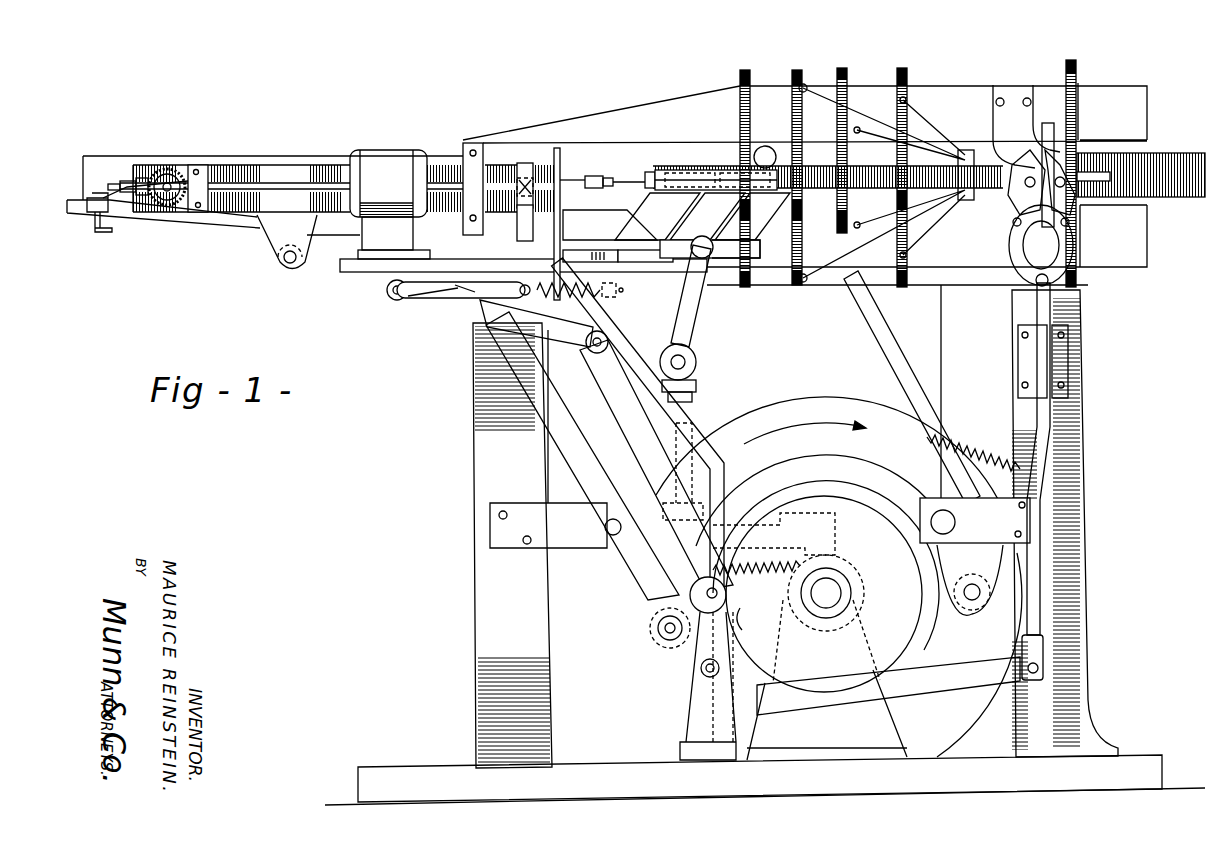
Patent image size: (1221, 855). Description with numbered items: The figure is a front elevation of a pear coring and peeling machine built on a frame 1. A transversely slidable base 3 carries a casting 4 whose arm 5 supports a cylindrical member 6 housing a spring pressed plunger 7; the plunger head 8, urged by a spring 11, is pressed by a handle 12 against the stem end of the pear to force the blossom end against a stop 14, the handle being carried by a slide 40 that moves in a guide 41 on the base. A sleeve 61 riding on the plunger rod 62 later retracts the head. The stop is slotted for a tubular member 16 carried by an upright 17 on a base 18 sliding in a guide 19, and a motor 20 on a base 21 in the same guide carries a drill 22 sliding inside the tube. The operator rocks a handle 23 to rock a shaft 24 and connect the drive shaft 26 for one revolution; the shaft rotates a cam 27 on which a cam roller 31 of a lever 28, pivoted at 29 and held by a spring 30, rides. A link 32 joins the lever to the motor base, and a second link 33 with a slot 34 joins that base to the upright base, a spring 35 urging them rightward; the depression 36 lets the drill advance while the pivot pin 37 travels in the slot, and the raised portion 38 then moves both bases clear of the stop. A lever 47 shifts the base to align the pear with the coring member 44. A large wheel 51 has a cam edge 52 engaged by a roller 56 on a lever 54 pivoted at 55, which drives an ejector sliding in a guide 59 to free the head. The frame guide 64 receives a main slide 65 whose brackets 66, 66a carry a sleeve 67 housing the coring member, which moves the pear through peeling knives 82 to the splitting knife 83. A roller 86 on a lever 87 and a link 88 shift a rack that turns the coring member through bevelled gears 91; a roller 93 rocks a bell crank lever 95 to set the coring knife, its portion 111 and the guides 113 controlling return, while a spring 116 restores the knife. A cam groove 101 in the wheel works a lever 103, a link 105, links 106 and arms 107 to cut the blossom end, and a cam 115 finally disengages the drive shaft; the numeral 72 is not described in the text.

The frame 1 is at (1135, 98).
The base 3 is at (590, 257).
The casting 4 is at (632, 257).
The arm 5 is at (657, 216).
The cylindrical member 6 is at (690, 166).
The spring pressed plunger 7 is at (688, 172).
The head 8 is at (652, 172).
The spring 11 is at (707, 216).
The handle 12 is at (765, 146).
The stop 14 is at (560, 160).
The tubular member 16 is at (568, 180).
The upright 17 is at (524, 163).
The base 18 is at (520, 224).
The guide 19 is at (352, 273).
The motor 20 is at (372, 160).
The base 21 is at (380, 243).
The drill 22 is at (503, 167).
The handle 23 is at (697, 306).
The shaft 24 is at (697, 362).
The drive shaft 26 is at (842, 593).
The cam 27 is at (857, 685).
The lever 28 is at (633, 442).
The pivot 29 is at (701, 668).
The spring 30 is at (701, 433).
The cam roller 31 is at (704, 588).
The link 32 is at (480, 300).
The second link 33 is at (455, 292).
The slot 34 is at (420, 296).
The spring 35 is at (576, 296).
The depression 36 is at (742, 614).
The pivot pin 37 is at (390, 297).
The raised portion 38 is at (773, 687).
The slide 40 is at (710, 247).
The guide 41 is at (736, 247).
The coring member 44 is at (613, 178).
The lever 47 is at (704, 428).
The large wheel 51 is at (822, 396).
The cam edge 52 is at (836, 456).
The lever 54 is at (572, 428).
The pivot 55 is at (611, 535).
The roller 56 is at (658, 628).
The guide 59 is at (610, 225).
The sleeve 61 is at (752, 216).
The rod 62 is at (716, 168).
The guide 64 is at (1135, 148).
The main slide 65 is at (1175, 158).
The bracket 66 is at (200, 170).
The bracket 66a is at (468, 160).
The sleeve 67 is at (315, 170).
The rod 72 is at (942, 323).
The peeling knives 82 is at (870, 95).
The splitting knife 83 is at (1100, 172).
The roller 86 is at (977, 588).
The lever 87 is at (860, 338).
The link 88 is at (300, 266).
The bevelled gears 91 is at (142, 195).
The roller 93 is at (110, 215).
The bell crank lever 95 is at (118, 190).
The cam groove 101 is at (797, 488).
The lever 103 is at (965, 688).
The link 105 is at (1052, 442).
The links 106 is at (1062, 262).
The arms 107 is at (1012, 200).
The portion 111 is at (72, 218).
The guides 113 is at (83, 190).
The cam 115 is at (836, 545).
The spring 116 is at (165, 168).